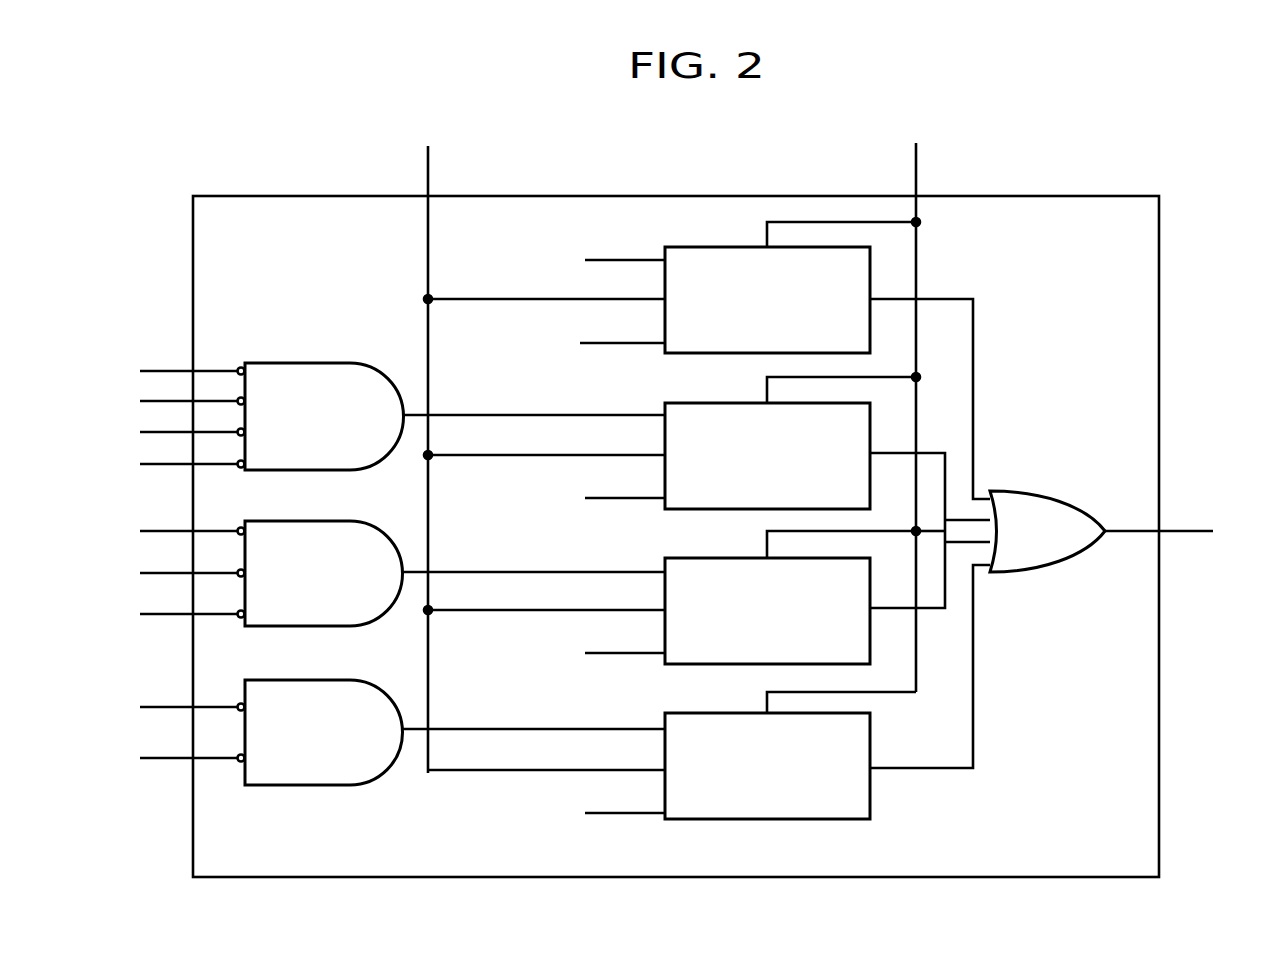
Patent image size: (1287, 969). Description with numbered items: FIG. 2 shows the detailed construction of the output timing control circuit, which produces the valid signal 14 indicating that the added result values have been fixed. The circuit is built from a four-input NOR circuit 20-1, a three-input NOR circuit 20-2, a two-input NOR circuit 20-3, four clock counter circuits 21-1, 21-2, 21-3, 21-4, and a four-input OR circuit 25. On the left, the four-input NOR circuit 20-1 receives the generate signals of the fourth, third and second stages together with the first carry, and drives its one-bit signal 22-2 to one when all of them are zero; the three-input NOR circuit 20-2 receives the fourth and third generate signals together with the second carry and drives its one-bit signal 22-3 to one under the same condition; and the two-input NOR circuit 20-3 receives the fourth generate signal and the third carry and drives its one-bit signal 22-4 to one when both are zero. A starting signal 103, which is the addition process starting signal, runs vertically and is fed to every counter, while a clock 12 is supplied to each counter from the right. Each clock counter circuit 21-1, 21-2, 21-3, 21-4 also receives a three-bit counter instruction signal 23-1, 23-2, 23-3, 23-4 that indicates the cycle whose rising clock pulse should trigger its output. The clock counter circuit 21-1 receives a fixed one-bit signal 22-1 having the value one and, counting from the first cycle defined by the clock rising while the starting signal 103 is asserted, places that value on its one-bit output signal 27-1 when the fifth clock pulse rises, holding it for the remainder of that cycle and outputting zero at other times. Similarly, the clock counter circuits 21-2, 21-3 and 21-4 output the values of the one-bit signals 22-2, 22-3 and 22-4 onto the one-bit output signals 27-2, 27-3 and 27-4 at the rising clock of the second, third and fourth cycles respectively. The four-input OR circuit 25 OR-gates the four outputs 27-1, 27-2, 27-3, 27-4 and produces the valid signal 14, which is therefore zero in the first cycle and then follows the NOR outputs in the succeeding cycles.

The starting signal 103 is at (428, 170).
The clock 12 is at (918, 168).
The 4-input NOR circuit 20-1 is at (316, 363).
The 3-input NOR circuit 20-2 is at (314, 521).
The 2-input NOR circuit 20-3 is at (316, 680).
The clock counter circuit 21-1 is at (702, 247).
The clock counter circuit 21-2 is at (702, 403).
The clock counter circuit 21-3 is at (702, 558).
The clock counter circuit 21-4 is at (702, 713).
The 1-bit signal 22-1 is at (622, 260).
The 1-bit signal 22-2 is at (483, 415).
The 1-bit signal 22-3 is at (483, 572).
The 1-bit signal 22-4 is at (483, 729).
The 3-bit counter instruction signal 23-1 is at (620, 343).
The 3-bit counter instruction signal 23-2 is at (623, 498).
The 3-bit counter instruction signal 23-3 is at (623, 653).
The 3-bit counter instruction signal 23-4 is at (627, 813).
The 4-input OR circuit 25 is at (1088, 510).
The 1-bit output signal 27-1 is at (974, 344).
The 1-bit output signal 27-2 is at (945, 470).
The 1-bit output signal 27-3 is at (945, 595).
The 1-bit output signal 27-4 is at (974, 737).
The valid signal 14 is at (1186, 530).